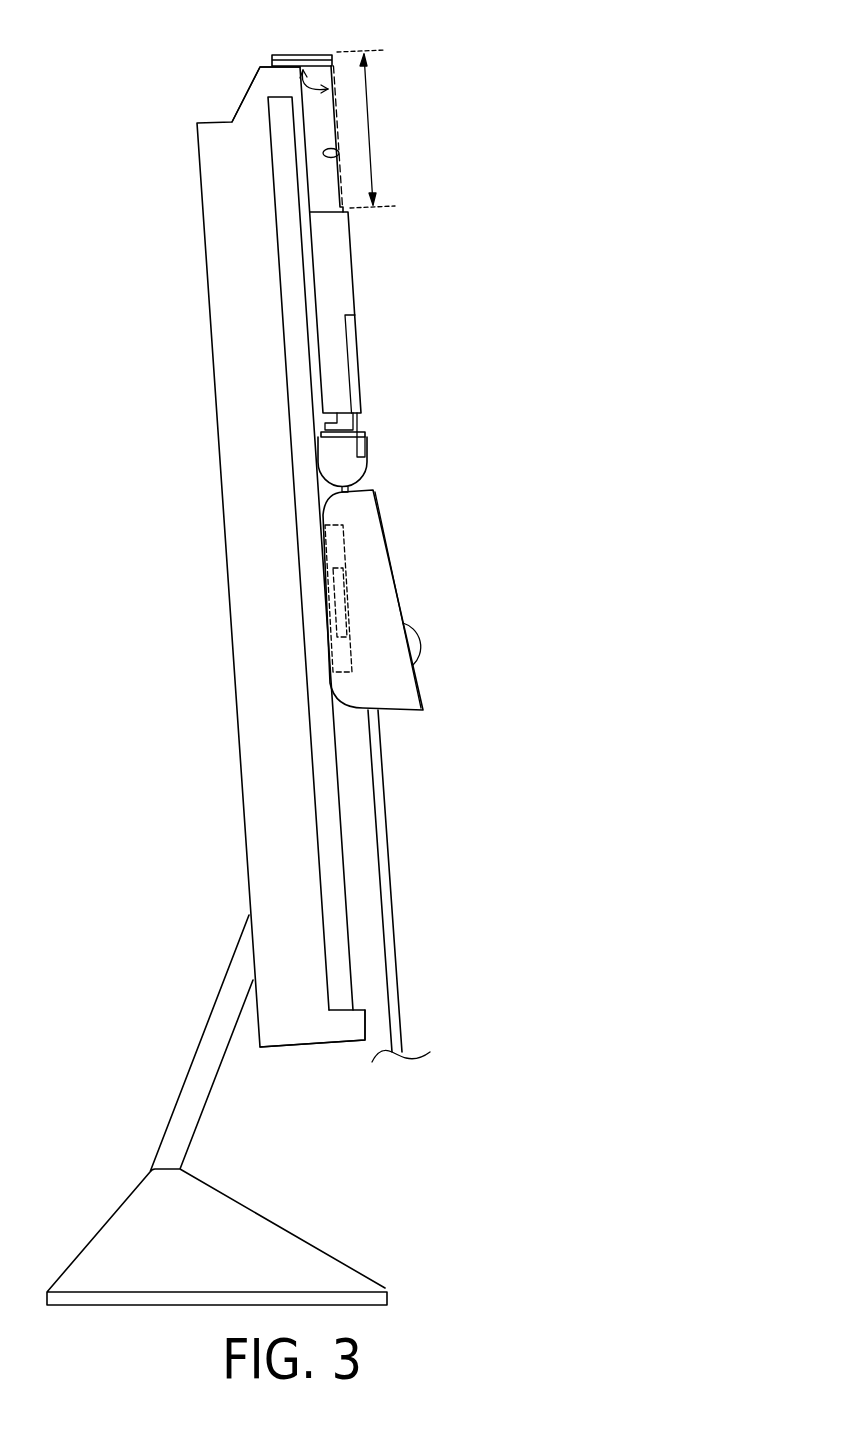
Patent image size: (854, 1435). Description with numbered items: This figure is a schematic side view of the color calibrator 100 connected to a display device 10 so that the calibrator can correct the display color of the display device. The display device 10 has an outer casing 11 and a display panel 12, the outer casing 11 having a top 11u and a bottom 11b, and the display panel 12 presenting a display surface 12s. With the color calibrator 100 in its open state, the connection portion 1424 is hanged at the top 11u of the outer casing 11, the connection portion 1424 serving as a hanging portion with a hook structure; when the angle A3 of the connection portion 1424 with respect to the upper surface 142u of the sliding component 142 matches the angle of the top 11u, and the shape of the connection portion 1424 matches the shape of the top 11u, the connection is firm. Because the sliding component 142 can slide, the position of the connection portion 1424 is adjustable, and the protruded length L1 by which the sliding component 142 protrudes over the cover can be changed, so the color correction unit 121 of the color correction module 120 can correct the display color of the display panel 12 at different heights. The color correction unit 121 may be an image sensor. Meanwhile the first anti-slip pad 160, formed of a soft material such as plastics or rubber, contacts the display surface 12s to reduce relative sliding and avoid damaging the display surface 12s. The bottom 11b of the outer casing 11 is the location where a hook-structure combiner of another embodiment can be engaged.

The display device 10 is at (122, 173).
The outer casing 11 is at (218, 187).
The display panel 12 is at (290, 257).
The top of the outer casing 11u is at (261, 67).
The bottom of the outer casing 11b is at (348, 1043).
The display surface 12s is at (350, 967).
The color calibrator 100 is at (432, 372).
The color correction module 120 is at (347, 608).
The color correction unit 121 is at (338, 580).
The sliding component 142 is at (337, 110).
The upper surface 142u is at (339, 152).
The connection portion 1424 is at (303, 55).
The first anti-slip pad 160 is at (327, 527).
The angle A3 is at (313, 97).
The protruded length L1 is at (372, 175).